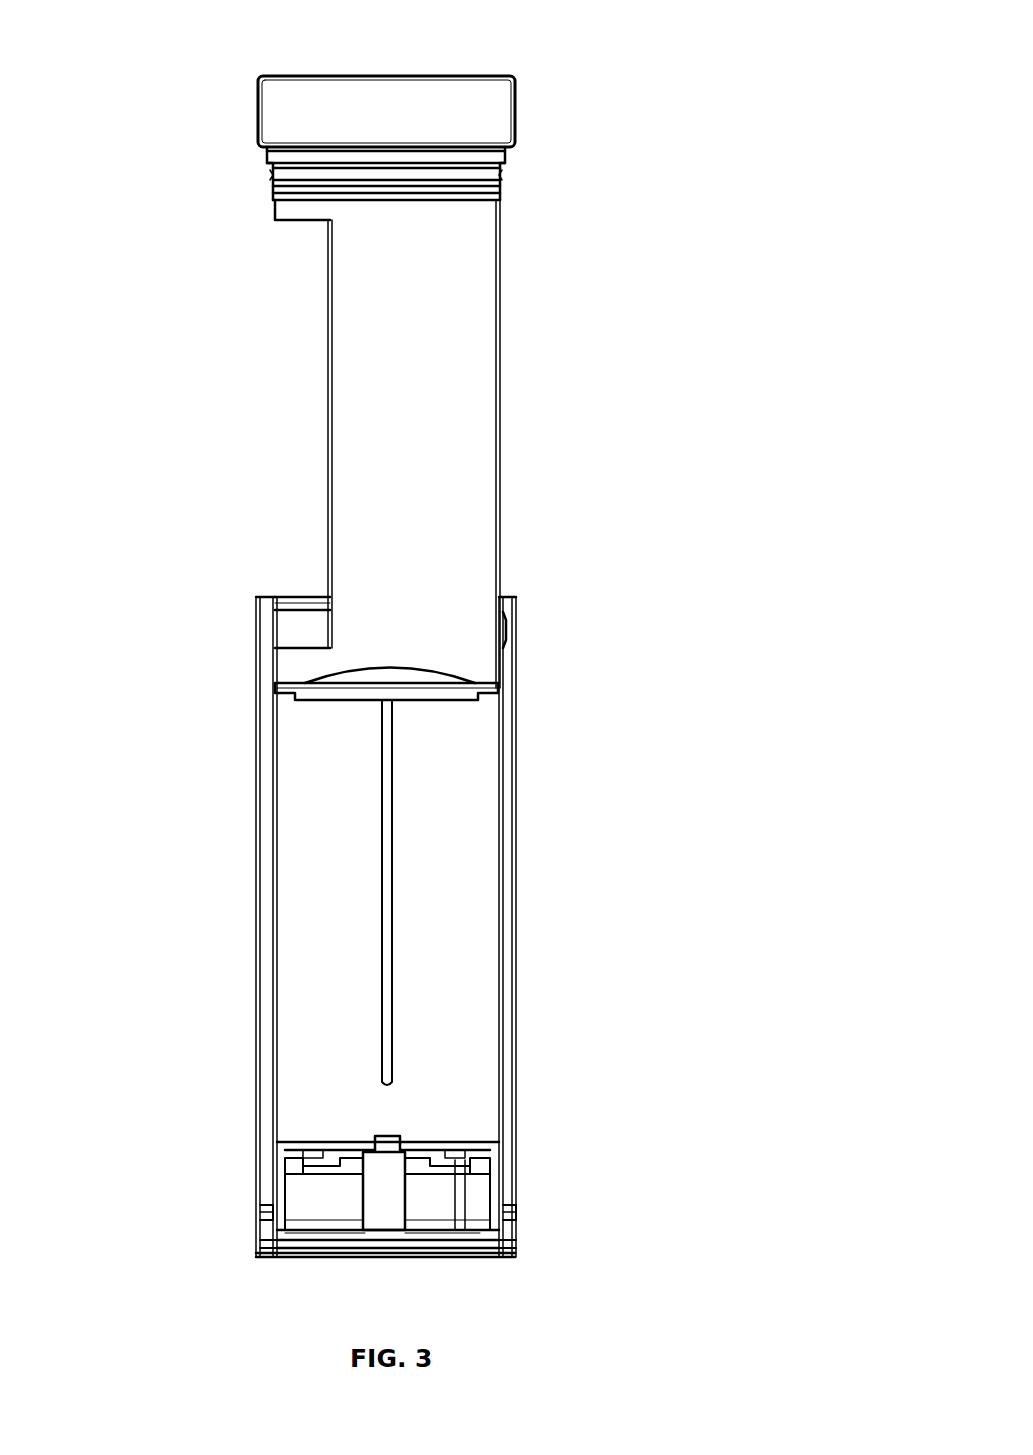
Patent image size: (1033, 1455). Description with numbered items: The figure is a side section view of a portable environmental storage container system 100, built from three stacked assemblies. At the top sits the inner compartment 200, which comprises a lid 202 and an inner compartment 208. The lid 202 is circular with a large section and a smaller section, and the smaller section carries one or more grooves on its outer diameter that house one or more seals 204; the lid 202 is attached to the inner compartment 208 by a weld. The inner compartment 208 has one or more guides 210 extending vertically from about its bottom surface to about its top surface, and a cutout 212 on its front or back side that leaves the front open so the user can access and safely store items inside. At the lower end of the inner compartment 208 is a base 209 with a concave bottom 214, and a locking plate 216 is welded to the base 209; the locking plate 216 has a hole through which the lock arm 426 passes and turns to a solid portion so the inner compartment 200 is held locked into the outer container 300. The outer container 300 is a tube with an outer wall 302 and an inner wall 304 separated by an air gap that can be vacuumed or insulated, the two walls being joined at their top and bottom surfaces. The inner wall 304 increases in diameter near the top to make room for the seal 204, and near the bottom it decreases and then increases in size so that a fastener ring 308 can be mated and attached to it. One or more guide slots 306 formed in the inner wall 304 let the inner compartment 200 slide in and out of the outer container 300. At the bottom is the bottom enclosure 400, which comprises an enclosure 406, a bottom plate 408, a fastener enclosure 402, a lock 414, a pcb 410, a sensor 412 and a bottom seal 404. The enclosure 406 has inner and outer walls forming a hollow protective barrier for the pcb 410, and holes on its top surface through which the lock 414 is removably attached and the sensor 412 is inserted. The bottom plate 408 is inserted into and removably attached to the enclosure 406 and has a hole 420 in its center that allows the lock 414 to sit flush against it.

The portable environmental storage container system 100 is at (228, 76).
The inner compartment 200 is at (507, 455).
The lid 202 is at (480, 126).
The seal 204 is at (273, 179).
The inner compartment 208 is at (447, 292).
The base 209 is at (470, 695).
The guide 210 is at (499, 562).
The cutout 212 is at (322, 390).
The concave bottom 214 is at (427, 680).
The locking plate 216 is at (300, 699).
The outer container 300 is at (520, 780).
The outer wall 302 is at (517, 950).
The inner wall 304 is at (272, 932).
The guide slot 306 is at (385, 822).
The fastener ring 308 is at (262, 1217).
The bottom enclosure 400 is at (245, 1240).
The fastener enclosure 402 is at (505, 1262).
The bottom seal 404 is at (495, 1170).
The enclosure 406 is at (282, 1172).
The bottom plate 408 is at (490, 1240).
The pcb 410 is at (302, 1244).
The sensor 412 is at (465, 1168).
The lock 414 is at (385, 1235).
The hole 420 is at (355, 1235).
The lock arm 426 is at (283, 1145).